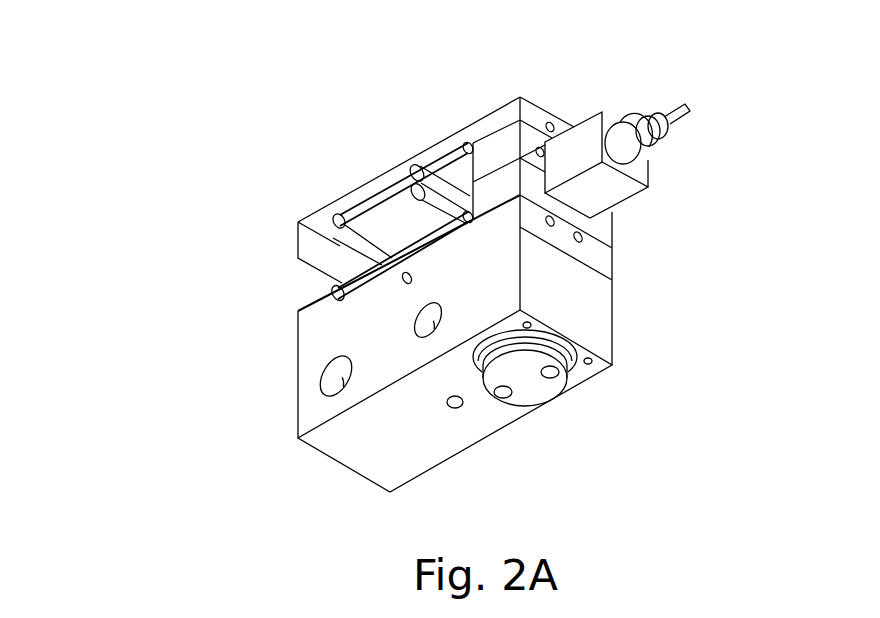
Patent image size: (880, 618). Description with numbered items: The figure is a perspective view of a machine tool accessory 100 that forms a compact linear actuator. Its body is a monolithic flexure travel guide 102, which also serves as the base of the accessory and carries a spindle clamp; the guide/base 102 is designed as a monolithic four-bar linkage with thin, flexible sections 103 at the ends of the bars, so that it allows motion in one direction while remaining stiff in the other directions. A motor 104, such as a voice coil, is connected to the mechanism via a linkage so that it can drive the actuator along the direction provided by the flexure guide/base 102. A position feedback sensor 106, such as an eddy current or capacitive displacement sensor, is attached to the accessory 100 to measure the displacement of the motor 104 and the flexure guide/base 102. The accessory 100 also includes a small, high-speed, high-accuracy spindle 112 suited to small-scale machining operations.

The machine tool accessory 100 is at (210, 229).
The monolithic flexure travel guide 102 is at (350, 199).
The thin, flexible sections 103 is at (468, 136).
The motor 104 is at (546, 393).
The position feedback sensor 106 is at (452, 409).
The spindle 112 is at (676, 165).